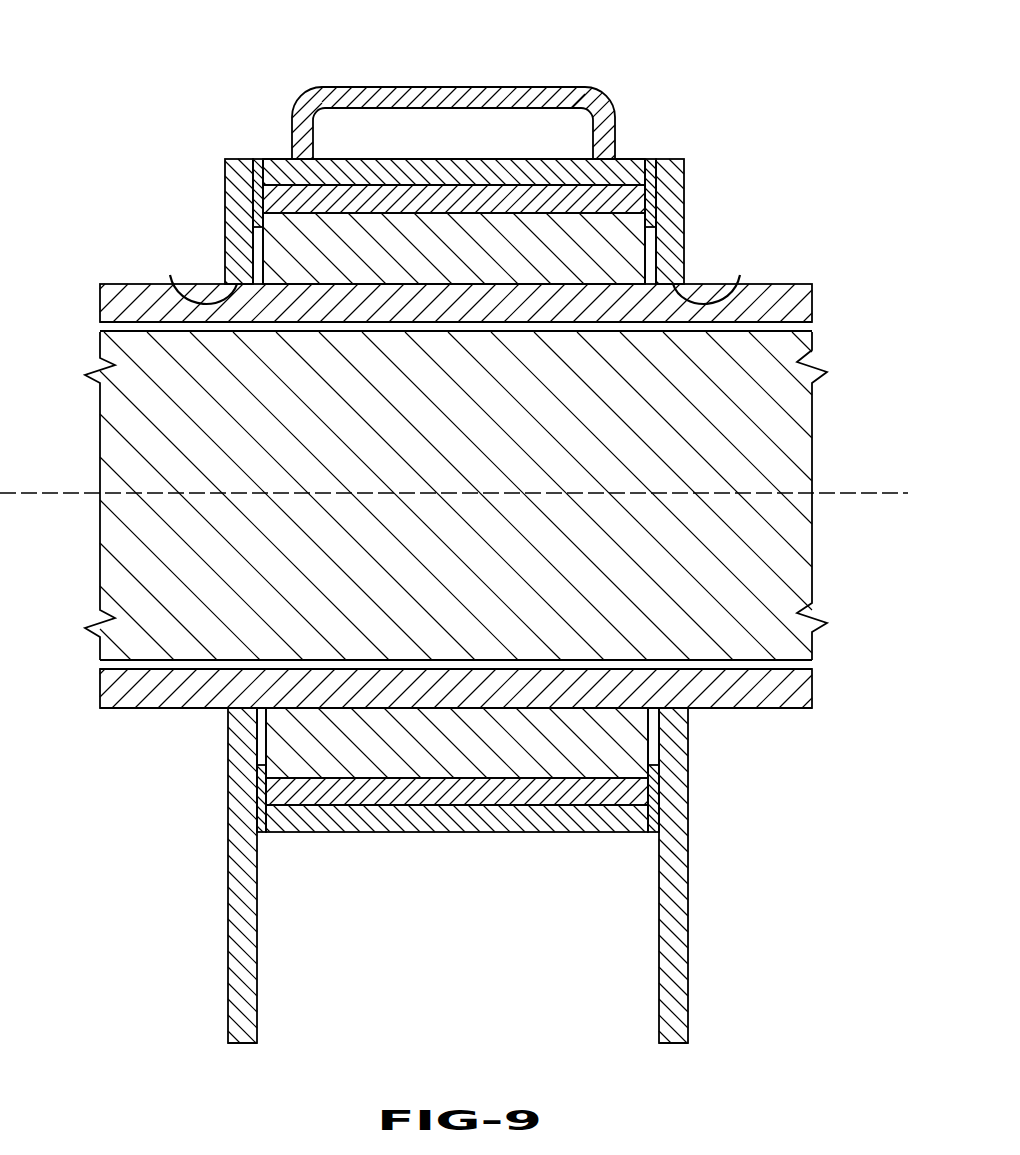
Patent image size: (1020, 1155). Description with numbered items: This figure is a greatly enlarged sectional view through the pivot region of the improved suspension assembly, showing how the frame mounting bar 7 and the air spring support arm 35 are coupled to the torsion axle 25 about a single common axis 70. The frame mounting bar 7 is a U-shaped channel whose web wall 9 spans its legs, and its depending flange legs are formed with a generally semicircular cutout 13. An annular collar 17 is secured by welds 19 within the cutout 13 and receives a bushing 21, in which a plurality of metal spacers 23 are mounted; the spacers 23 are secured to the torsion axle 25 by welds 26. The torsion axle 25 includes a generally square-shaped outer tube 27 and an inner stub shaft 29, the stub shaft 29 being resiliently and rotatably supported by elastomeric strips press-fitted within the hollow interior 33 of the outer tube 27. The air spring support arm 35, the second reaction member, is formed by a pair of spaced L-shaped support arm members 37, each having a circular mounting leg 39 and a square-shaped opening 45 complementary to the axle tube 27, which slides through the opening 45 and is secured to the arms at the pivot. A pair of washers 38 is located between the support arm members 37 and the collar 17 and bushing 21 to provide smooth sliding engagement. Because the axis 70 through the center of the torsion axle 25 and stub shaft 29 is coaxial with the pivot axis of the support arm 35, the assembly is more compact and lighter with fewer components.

The frame mounting bar 7 is at (613, 92).
The web wall 9 is at (385, 90).
The semicircular cutout 13 is at (303, 158).
The annular collar 17 is at (480, 166).
The welds 19 is at (285, 158).
The bushing 21 is at (514, 192).
The metal spacers 23 is at (455, 228).
The torsion axle 25 is at (768, 715).
The welds 26 is at (224, 290).
The outer tube 27 is at (115, 690).
The stub shaft 29 is at (800, 446).
The hollow interior 33 is at (767, 670).
The air spring support arm 35 is at (222, 960).
The support arm members 37 is at (228, 1005).
The washers 38 is at (262, 800).
The circular mounting leg 39 is at (232, 188).
The square-shaped opening 45 is at (170, 275).
The axis 70 is at (845, 494).